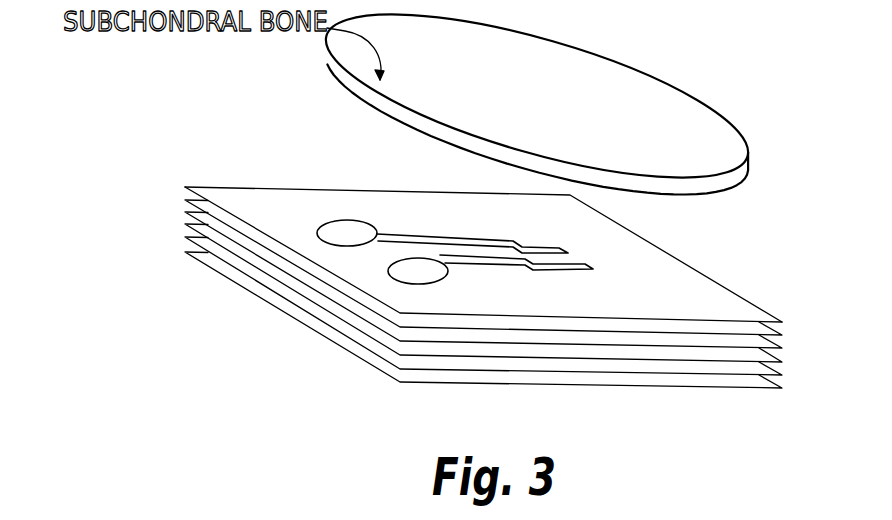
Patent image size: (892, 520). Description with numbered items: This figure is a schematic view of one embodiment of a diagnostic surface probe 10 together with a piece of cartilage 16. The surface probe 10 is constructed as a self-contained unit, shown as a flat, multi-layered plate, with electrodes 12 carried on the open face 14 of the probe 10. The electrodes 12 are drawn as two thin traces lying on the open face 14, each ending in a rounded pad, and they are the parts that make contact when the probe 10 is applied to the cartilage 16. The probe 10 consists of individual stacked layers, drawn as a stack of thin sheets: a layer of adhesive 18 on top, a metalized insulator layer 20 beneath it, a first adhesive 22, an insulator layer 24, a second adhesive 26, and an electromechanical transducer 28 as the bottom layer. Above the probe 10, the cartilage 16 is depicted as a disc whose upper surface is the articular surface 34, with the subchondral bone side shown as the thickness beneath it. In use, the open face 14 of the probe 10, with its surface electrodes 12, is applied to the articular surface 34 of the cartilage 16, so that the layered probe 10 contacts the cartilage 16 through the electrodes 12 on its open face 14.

The surface probe 10 is at (486, 295).
The electrodes 12 is at (565, 250).
The open face 14 is at (613, 305).
The cartilage 16 is at (678, 82).
The adhesive 18 is at (185, 187).
The metalized insulator layer 20 is at (185, 200).
The first adhesive 22 is at (185, 212).
The insulator layer 24 is at (185, 224).
The second adhesive 26 is at (185, 237).
The electromechanical transducer 28 is at (185, 252).
The articular surface 34 is at (397, 122).